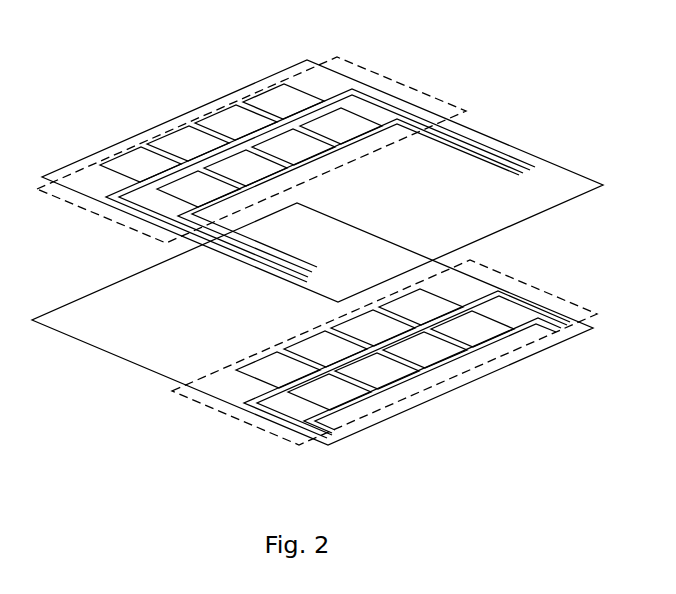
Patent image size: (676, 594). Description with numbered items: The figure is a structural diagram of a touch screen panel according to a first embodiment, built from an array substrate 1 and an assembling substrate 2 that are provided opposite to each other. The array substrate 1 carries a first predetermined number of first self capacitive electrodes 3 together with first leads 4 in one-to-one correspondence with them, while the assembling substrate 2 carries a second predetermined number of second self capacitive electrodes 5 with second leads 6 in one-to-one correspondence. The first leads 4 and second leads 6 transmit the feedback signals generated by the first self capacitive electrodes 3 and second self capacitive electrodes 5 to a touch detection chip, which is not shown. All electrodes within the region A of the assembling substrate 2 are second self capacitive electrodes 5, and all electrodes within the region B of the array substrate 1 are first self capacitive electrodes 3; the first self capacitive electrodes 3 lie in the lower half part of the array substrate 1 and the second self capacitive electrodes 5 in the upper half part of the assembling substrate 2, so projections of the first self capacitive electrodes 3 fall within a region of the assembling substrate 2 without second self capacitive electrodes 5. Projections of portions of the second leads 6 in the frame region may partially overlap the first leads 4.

The array substrate 1 is at (118, 379).
The assembling substrate 2 is at (551, 141).
The first self capacitive electrodes 3 is at (383, 377).
The first leads 4 is at (503, 347).
The second self capacitive electrodes 5 is at (193, 138).
The second leads 6 is at (282, 73).
The region A is at (388, 75).
The region B is at (532, 282).